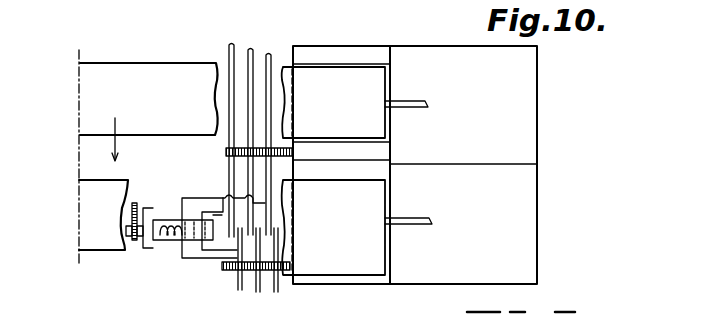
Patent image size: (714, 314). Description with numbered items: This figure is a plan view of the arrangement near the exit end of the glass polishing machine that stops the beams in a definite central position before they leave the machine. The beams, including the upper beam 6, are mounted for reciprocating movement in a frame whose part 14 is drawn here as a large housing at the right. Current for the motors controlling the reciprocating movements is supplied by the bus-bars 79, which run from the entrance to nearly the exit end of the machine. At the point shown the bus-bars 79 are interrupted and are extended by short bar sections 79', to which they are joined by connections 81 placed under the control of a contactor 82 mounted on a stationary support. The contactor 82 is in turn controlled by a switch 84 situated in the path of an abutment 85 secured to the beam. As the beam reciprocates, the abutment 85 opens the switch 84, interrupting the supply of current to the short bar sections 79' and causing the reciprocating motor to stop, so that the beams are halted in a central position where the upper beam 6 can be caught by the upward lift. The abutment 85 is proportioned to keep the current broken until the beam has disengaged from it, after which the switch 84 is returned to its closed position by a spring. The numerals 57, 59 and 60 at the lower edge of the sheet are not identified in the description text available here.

The upper beam 6 is at (155, 84).
The frame part 14 is at (512, 132).
The bus-bars 79 is at (258, 126).
The short bar sections 79' is at (244, 270).
The connections 81 is at (193, 198).
The contactor 82 is at (170, 243).
The switch 84 is at (128, 231).
The abutment 85 is at (128, 212).
The line 57 is at (259, 311).
The line 59 is at (336, 313).
The line 60 is at (366, 306).